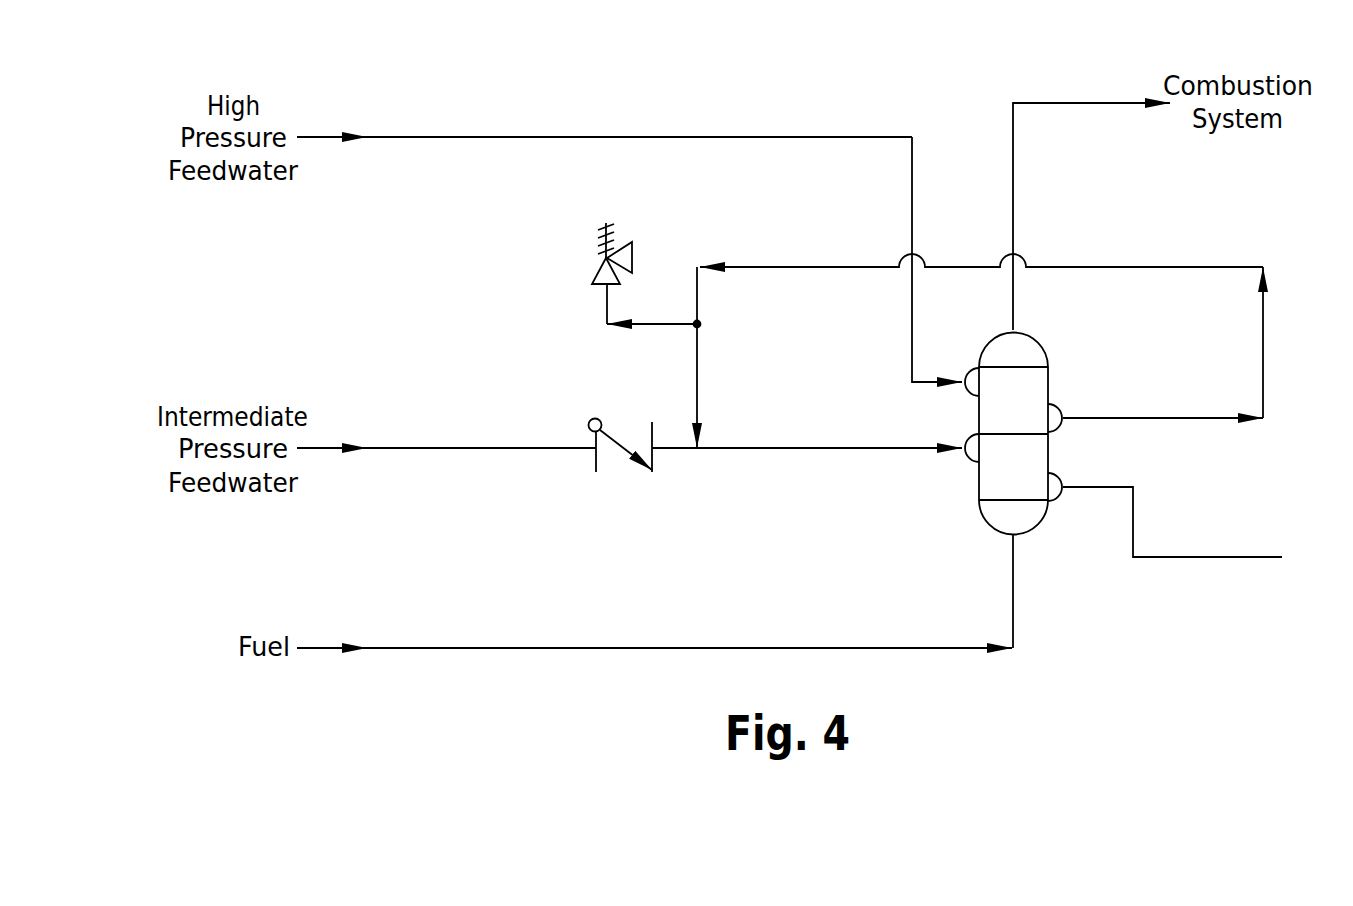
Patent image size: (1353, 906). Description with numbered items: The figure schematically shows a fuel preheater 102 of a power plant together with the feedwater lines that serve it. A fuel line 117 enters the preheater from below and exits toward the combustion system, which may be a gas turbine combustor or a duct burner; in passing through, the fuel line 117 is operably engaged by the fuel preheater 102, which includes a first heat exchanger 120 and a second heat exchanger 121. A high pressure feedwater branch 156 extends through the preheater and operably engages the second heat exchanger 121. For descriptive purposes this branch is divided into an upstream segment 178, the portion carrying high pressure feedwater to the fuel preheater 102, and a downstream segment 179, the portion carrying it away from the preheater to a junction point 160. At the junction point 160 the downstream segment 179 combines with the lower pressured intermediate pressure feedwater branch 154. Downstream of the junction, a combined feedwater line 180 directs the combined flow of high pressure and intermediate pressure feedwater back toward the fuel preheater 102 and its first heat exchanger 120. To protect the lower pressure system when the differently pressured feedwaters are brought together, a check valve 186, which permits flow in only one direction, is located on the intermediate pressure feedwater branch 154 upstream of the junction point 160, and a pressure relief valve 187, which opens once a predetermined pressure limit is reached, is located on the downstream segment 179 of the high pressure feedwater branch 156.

The fuel preheater 102 is at (1123, 430).
The fuel line 117 is at (1013, 192).
The first heat exchanger 120 is at (1037, 482).
The second heat exchanger 121 is at (1037, 417).
The intermediate pressure feedwater branch 154 is at (458, 448).
The high pressure feedwater branch 156 is at (532, 137).
The junction point 160 is at (695, 450).
The upstream segment 178 is at (793, 135).
The downstream segment 179 is at (787, 265).
The combined feedwater line 180 is at (815, 450).
The check valve 186 is at (612, 484).
The pressure relief valve 187 is at (582, 310).